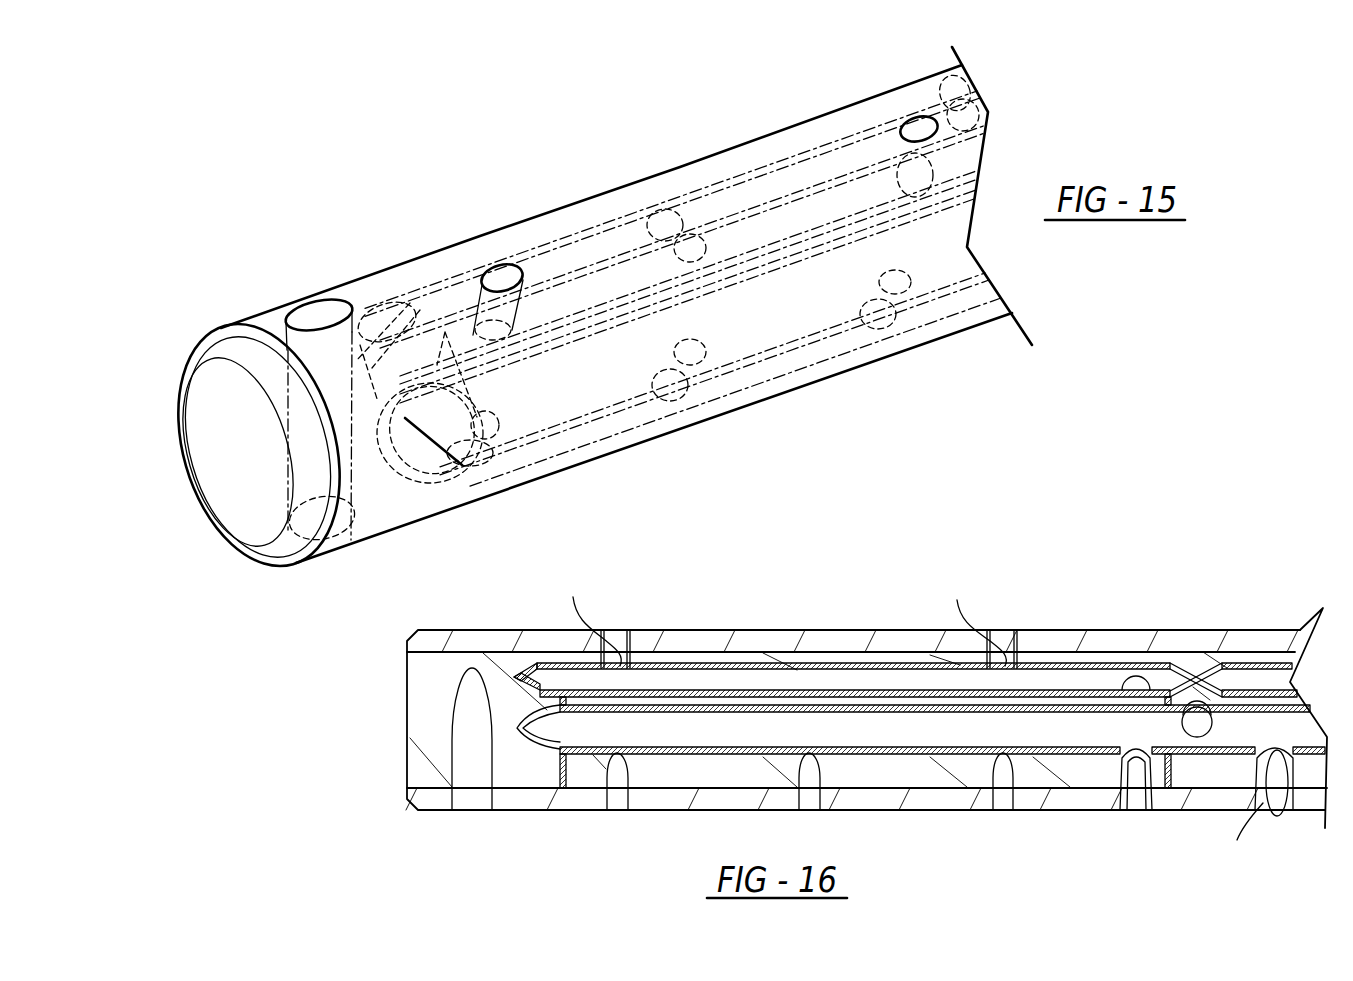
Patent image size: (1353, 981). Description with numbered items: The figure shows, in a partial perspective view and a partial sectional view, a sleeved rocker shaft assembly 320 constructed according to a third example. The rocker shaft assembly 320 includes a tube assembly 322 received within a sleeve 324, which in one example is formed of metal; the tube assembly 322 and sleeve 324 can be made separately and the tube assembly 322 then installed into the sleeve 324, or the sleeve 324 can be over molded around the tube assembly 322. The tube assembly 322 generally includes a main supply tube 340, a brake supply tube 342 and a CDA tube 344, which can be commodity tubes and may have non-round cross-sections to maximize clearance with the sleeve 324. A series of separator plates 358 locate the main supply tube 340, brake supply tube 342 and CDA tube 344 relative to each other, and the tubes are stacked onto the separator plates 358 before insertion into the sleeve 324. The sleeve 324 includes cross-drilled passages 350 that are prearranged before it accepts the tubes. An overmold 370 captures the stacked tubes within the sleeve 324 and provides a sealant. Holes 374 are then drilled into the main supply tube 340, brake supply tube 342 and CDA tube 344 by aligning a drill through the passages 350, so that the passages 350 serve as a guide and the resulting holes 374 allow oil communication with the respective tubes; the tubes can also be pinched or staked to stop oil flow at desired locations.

In FIG. 15, the rocker shaft assembly 320 is at (450, 178).
In FIG. 16, the rocker shaft assembly 320 is at (1210, 588).
In FIG. 15, the tube assembly 322 is at (753, 323).
In FIG. 16, the tube assembly 322 is at (906, 773).
In FIG. 15, the sleeve 324 is at (292, 568).
In FIG. 16, the sleeve 324 is at (850, 640).
In FIG. 15, the main supply tube 340 is at (582, 378).
In FIG. 16, the main supply tube 340 is at (700, 742).
In FIG. 15, the brake supply tube 342 is at (601, 258).
In FIG. 15, the CDA tube 344 is at (808, 213).
In FIG. 16, the CDA tube 344 is at (688, 683).
In FIG. 16, the passages 350 is at (612, 668).
In FIG. 15, the separator plates 358 is at (393, 318).
In FIG. 16, the overmold 370 is at (1080, 768).
In FIG. 16, the holes 374 is at (909, 731).